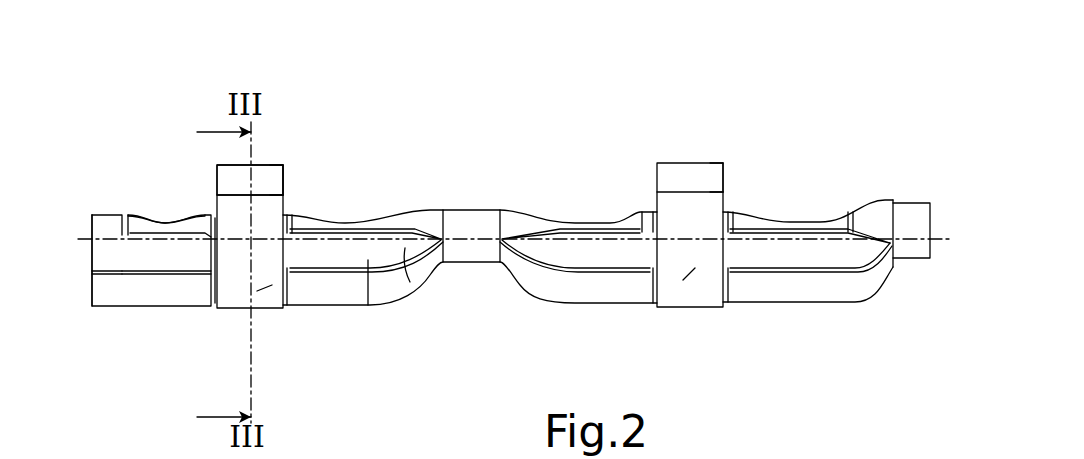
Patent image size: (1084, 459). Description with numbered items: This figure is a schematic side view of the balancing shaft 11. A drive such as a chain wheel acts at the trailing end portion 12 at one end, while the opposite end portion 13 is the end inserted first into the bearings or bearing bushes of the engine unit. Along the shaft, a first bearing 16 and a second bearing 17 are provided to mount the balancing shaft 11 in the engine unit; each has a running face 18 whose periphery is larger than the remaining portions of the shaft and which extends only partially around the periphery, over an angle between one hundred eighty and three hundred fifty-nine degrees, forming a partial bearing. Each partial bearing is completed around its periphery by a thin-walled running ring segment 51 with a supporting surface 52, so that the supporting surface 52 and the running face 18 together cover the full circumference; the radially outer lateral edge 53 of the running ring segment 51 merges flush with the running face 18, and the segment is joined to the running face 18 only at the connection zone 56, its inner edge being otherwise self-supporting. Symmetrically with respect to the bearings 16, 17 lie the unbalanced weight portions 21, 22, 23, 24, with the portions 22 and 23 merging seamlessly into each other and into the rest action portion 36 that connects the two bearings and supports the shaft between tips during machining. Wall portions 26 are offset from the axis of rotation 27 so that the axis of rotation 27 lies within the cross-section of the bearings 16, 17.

The balancing shaft 11 is at (812, 120).
The trailing end portion 12 is at (910, 196).
The end portion 13 is at (110, 200).
The first bearing 16 is at (227, 322).
The second bearing 17 is at (663, 320).
The running face 18 is at (272, 285).
The unbalanced weight portion 21 is at (170, 317).
The unbalanced weight portion 22 is at (337, 315).
The unbalanced weight portion 23 is at (587, 314).
The unbalanced weight portion 24 is at (765, 312).
The wall portion 26 is at (162, 220).
The axis of rotation 27 is at (920, 242).
The rest action portion 36 is at (480, 272).
The running ring segment 51 is at (283, 157).
The supporting surface 52 is at (262, 176).
The radially outer lateral edge 53 is at (283, 163).
The connection zone 56 is at (290, 192).